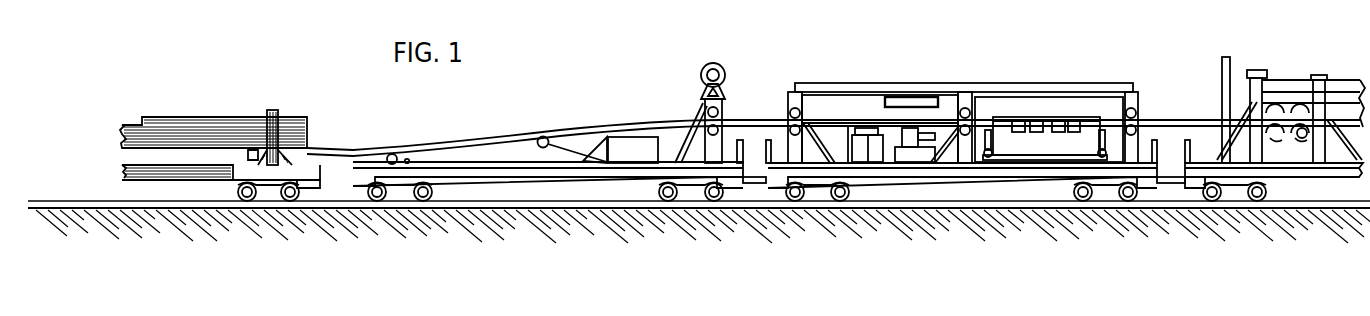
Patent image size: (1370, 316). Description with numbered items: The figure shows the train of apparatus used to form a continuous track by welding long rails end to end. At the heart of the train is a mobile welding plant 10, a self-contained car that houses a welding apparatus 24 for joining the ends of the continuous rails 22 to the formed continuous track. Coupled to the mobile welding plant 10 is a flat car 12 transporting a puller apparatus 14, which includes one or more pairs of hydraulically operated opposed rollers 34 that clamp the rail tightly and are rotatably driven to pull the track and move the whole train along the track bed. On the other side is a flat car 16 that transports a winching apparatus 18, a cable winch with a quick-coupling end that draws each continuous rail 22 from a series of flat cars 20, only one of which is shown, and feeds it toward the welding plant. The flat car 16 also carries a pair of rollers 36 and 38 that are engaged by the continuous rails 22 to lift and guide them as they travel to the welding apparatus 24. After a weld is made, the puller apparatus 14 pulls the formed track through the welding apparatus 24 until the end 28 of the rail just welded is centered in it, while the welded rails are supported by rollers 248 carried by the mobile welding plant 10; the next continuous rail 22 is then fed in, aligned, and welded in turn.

The mobile welding plant 10 is at (890, 76).
The flat car 12 is at (1298, 74).
The puller apparatus 14 is at (1288, 155).
The flat car 16 is at (555, 115).
The winching apparatus 18 is at (658, 106).
The flat cars 20 is at (173, 100).
The continuous rails 22 is at (292, 117).
The welding apparatus 24 is at (1017, 145).
The end 28 is at (240, 155).
The rollers 34 is at (1303, 138).
The roller 36 is at (403, 147).
The roller 38 is at (545, 147).
The rollers 248 is at (788, 110).